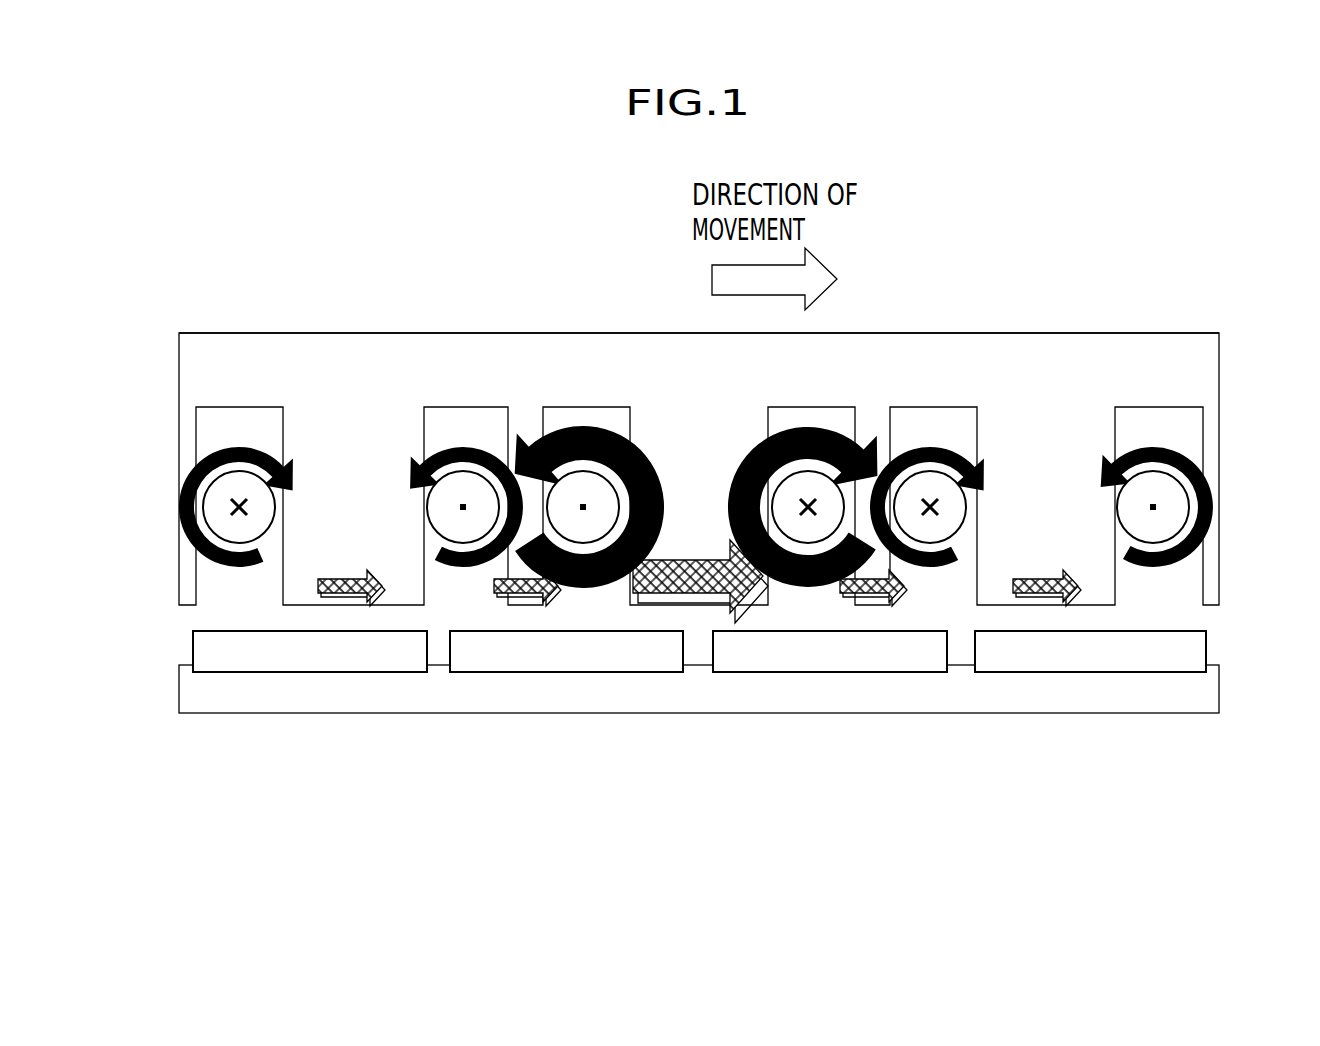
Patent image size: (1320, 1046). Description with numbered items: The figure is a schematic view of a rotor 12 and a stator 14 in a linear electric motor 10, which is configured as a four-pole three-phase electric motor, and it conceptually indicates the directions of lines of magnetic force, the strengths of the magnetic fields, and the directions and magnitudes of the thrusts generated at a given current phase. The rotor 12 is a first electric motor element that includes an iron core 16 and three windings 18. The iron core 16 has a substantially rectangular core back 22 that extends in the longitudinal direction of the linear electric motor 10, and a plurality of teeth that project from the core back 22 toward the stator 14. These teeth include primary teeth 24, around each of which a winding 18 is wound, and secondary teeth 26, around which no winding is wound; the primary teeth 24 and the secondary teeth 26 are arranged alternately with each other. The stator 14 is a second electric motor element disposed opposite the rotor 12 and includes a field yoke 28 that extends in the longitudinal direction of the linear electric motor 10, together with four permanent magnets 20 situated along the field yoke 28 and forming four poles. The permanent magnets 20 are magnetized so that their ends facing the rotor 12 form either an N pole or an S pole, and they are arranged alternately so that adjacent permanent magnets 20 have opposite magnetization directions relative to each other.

The linear electric motor 10 is at (247, 266).
The rotor 12 is at (1062, 318).
The stator 14 is at (710, 728).
The iron core 16 is at (302, 333).
The winding 18 is at (242, 476).
The permanent magnet 20 is at (513, 672).
The core back 22 is at (980, 355).
The primary tooth 24 is at (363, 452).
The secondary tooth 26 is at (525, 417).
The field yoke 28 is at (250, 715).